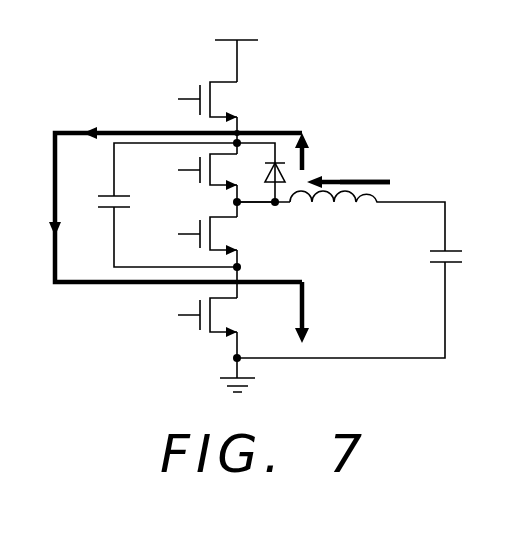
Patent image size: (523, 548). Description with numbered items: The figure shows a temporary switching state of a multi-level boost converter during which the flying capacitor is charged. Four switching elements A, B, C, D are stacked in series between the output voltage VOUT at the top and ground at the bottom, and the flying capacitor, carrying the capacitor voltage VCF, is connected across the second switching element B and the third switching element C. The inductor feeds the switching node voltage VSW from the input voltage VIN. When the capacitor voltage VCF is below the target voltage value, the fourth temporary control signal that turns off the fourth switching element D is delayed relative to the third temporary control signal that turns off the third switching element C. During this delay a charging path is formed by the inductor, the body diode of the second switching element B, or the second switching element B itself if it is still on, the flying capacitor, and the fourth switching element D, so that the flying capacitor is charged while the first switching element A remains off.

The first switching element A is at (213, 102).
The second switching element B is at (214, 172).
The third switching element C is at (214, 236).
The fourth switching element D is at (214, 317).
The output voltage VOUT is at (236, 27).
The capacitor voltage VCF is at (103, 186).
The switching node voltage VSW is at (263, 219).
The input voltage VIN is at (381, 183).